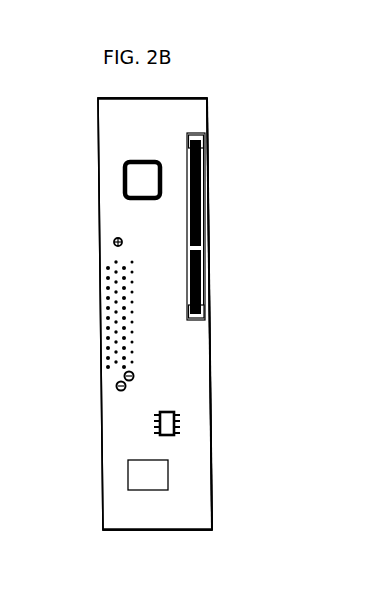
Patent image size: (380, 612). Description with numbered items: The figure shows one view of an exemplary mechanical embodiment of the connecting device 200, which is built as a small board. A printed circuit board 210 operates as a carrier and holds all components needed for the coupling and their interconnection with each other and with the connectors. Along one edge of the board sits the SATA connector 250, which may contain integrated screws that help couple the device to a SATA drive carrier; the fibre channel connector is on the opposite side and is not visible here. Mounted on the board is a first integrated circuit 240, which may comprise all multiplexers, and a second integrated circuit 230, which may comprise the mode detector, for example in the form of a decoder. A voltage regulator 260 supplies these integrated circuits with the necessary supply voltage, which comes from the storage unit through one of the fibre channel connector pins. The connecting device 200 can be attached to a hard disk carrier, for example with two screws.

The connecting device 200 is at (257, 302).
The printed circuit board 210 is at (188, 112).
The second integrated circuit 230 is at (181, 422).
The first integrated circuit 240 is at (123, 179).
The SATA connector 250 is at (203, 227).
The voltage regulator 260 is at (138, 475).